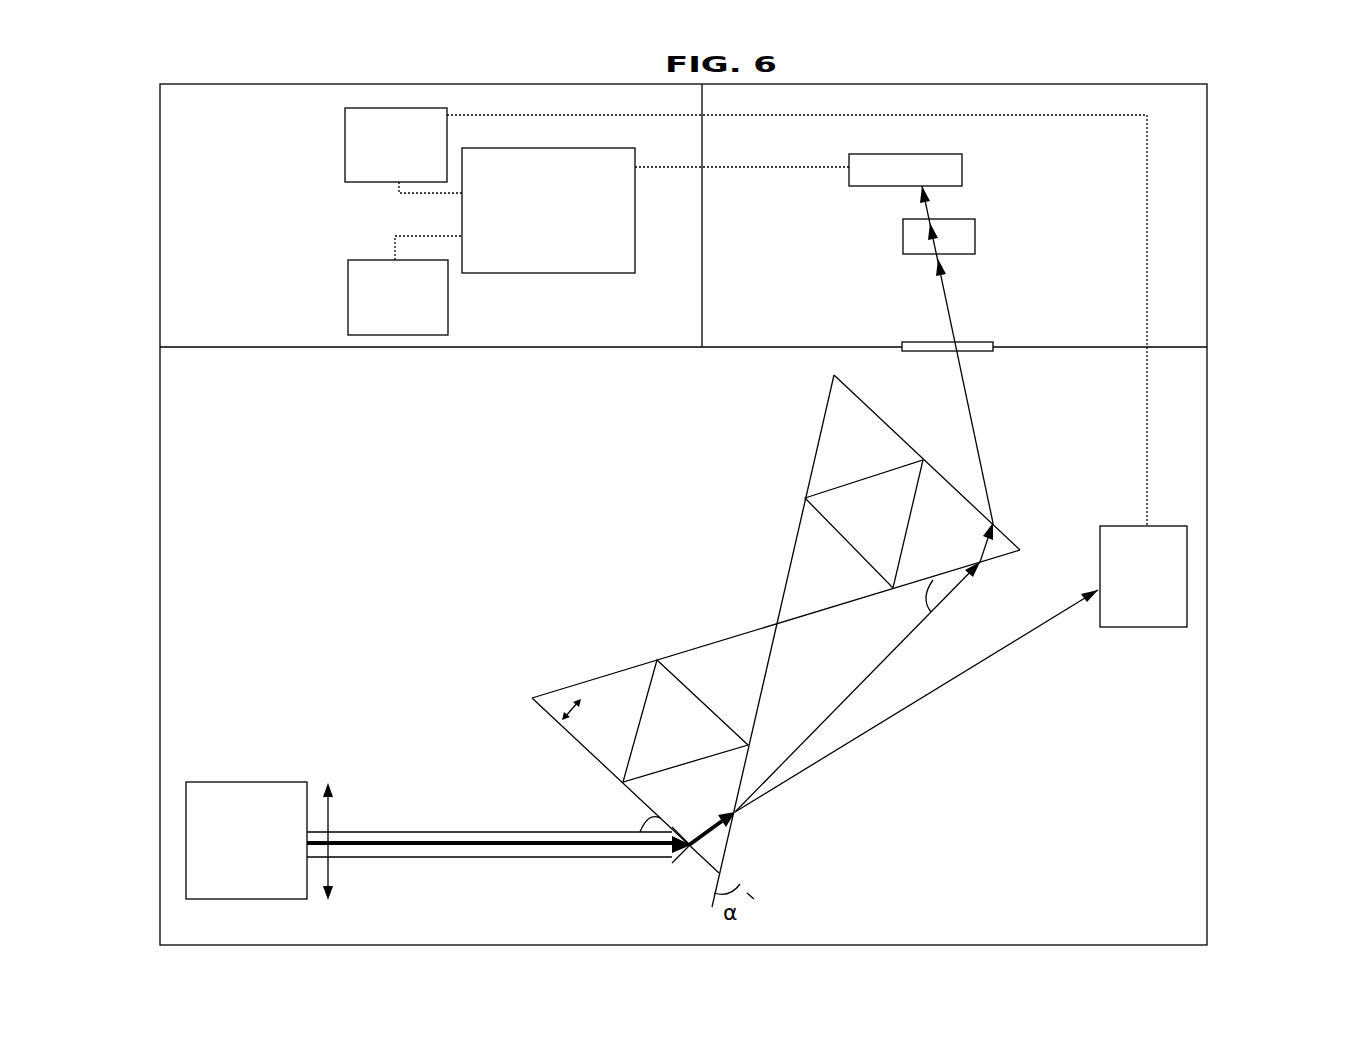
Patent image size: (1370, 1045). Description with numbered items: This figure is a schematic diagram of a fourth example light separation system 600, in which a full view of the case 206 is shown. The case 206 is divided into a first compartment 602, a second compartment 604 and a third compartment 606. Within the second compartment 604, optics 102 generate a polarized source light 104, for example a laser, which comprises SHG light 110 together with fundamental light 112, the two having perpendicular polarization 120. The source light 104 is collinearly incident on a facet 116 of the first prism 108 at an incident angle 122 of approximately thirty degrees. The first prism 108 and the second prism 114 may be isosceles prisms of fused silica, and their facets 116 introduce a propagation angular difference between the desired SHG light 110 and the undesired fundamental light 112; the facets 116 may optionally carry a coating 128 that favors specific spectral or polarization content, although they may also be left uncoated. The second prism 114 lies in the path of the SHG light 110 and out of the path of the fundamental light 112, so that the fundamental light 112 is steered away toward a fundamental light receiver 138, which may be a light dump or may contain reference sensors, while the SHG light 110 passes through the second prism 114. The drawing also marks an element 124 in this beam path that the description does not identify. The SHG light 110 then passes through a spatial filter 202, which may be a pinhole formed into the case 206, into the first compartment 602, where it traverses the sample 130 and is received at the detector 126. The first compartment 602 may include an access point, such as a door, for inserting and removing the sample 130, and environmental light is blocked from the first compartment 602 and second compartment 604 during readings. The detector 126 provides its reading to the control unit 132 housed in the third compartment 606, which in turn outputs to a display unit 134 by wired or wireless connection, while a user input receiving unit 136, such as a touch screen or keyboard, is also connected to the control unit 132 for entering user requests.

The fourth example light separation system 600 is at (1264, 67).
The case 206 is at (159, 250).
The third compartment 606 is at (231, 190).
The first compartment 602 is at (1082, 197).
The second compartment 604 is at (318, 454).
The user input receiving unit 136 is at (746, 317).
The control unit 132 is at (655, 210).
The display unit 134 is at (405, 285).
The detector 126 is at (905, 170).
The sample 130 is at (975, 255).
The spatial filter 202 is at (935, 342).
The fundamental light receiver 138 is at (1143, 576).
The optics 102 is at (246, 840).
The perpendicular polarization 120 is at (331, 828).
The first prism 108 is at (708, 645).
The second prism 114 is at (790, 567).
The facets 116 is at (840, 450).
The coating 128 is at (579, 699).
The incident angle 122 is at (637, 829).
The second mirror 124 is at (931, 612).
The source light 104 is at (482, 862).
The SHG light 110 is at (408, 842).
The fundamental light 112 is at (417, 850).